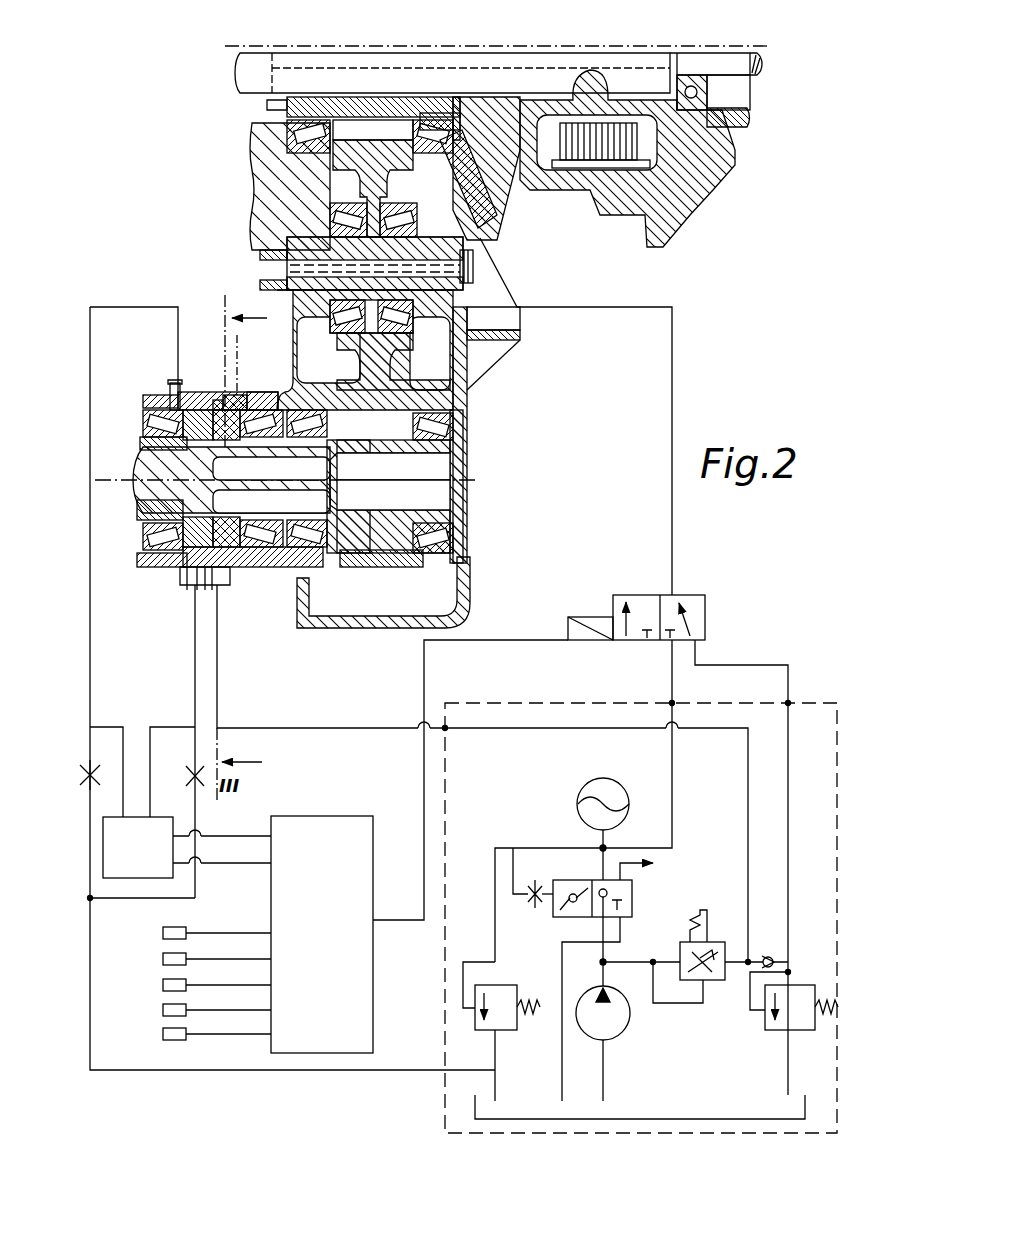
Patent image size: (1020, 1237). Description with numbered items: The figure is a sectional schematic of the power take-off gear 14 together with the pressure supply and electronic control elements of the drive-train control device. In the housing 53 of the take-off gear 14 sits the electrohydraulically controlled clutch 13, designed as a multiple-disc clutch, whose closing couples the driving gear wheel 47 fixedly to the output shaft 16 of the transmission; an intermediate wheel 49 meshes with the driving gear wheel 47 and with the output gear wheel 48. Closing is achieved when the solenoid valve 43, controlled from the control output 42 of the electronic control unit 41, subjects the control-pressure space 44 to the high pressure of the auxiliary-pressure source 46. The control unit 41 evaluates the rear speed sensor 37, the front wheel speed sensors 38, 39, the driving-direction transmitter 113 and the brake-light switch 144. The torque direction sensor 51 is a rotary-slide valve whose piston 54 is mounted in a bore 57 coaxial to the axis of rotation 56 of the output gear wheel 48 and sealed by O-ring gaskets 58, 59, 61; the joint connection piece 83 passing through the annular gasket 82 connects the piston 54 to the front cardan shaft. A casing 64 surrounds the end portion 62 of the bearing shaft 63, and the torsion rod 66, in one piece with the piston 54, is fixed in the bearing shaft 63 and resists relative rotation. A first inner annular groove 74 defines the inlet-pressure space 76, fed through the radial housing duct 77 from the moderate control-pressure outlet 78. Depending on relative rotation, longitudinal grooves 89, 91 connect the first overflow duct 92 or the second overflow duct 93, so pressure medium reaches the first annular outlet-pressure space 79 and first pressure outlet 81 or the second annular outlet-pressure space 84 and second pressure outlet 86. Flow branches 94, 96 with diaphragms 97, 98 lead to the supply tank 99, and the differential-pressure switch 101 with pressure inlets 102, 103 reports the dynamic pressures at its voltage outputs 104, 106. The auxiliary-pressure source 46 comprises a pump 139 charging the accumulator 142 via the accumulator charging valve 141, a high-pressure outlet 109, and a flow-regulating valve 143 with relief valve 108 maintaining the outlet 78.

The electrohydraulically controlled clutch 13 is at (672, 165).
The power take-off gear 14 is at (471, 407).
The output shaft 16 is at (436, 57).
The speed sensor 37 is at (163, 984).
The speed sensor 38 is at (163, 931).
The speed sensor 39 is at (163, 957).
The electronic control unit 41 is at (309, 818).
The control output 42 is at (395, 916).
The solenoid valve 43 is at (645, 605).
The control-pressure space 44 is at (460, 100).
The auxiliary-pressure source 46 is at (441, 994).
The driving gear wheel 47 is at (373, 104).
The output gear wheel 48 is at (392, 542).
The intermediate wheel 49 is at (390, 340).
The torque direction sensor 51 is at (148, 388).
The housing 53 is at (262, 148).
The piston 54 is at (195, 457).
The axis of rotation 56 is at (484, 475).
The bore 57 is at (237, 447).
The O-ring gasket 58 is at (247, 573).
The O-ring gasket 59 is at (207, 587).
The O-ring gasket 61 is at (187, 575).
The end portion 62 is at (283, 512).
The bearing shaft 63 is at (303, 447).
The casing 64 is at (265, 405).
The torsion rod 66 is at (267, 483).
The first inner annular groove 74 is at (220, 408).
The inlet-pressure space 76 is at (223, 412).
The radial housing duct 77 is at (212, 570).
The control-pressure outlet 78 is at (445, 725).
The first annular outlet-pressure space 79 is at (197, 580).
The first pressure outlet 81 is at (185, 583).
The annular gasket 82 is at (145, 407).
The joint connection piece 83 is at (147, 433).
The second annular outlet-pressure space 84 is at (173, 392).
The second pressure outlet 86 is at (175, 380).
The longitudinal groove 89 is at (238, 352).
The longitudinal groove 91 is at (160, 517).
The first overflow duct 92 is at (147, 563).
The second overflow duct 93 is at (200, 441).
The flow branch 94 is at (105, 725).
The flow branch 96 is at (200, 747).
The diaphragm 97 is at (189, 779).
The diaphragm 98 is at (100, 772).
The pressure-medium supply tank 99 is at (658, 1117).
The differential-pressure switch 101 is at (152, 866).
The pressure inlet 102 is at (150, 747).
The pressure inlet 103 is at (100, 789).
The first voltage output 104 is at (217, 834).
The second voltage output 106 is at (252, 865).
The relief valve 108 is at (782, 1030).
The outlet 109 is at (668, 699).
The driving-direction transmitter 113 is at (163, 1012).
The pump 139 is at (612, 1025).
The accumulator charging valve 141 is at (564, 878).
The accumulator 142 is at (577, 793).
The flow-regulating valve 143 is at (711, 978).
The brake-light switch 144 is at (170, 1040).